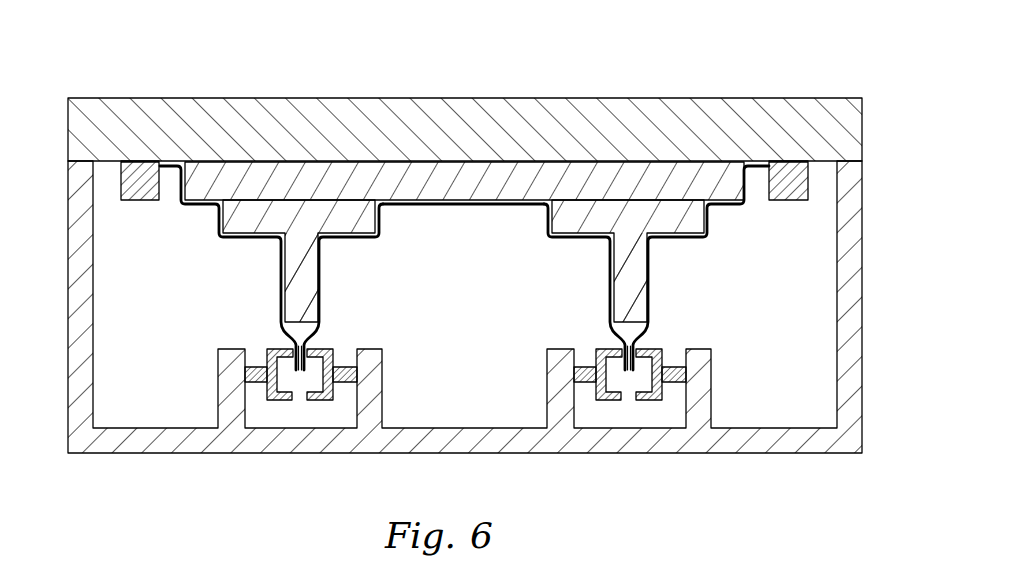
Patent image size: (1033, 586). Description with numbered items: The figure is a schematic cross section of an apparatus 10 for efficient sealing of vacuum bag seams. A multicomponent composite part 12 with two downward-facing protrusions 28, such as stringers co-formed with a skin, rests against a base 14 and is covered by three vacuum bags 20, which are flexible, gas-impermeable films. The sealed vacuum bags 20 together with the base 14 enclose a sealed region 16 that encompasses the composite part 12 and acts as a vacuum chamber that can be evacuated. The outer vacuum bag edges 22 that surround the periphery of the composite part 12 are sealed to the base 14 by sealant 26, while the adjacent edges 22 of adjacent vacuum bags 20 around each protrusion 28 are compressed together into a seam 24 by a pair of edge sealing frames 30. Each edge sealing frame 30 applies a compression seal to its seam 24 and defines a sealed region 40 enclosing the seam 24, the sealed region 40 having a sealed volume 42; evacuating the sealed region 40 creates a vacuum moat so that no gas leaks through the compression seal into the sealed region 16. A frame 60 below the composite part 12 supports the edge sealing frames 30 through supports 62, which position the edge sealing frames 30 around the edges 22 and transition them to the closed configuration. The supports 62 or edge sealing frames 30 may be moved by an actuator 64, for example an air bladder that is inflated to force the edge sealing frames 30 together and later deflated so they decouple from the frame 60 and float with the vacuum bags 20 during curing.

The apparatus 10 is at (152, 35).
The composite part 12 is at (222, 212).
The base 14 is at (210, 98).
The sealed region 16 is at (387, 206).
The vacuum bag 20 is at (278, 245).
The edge 22 is at (146, 162).
The seam 24 is at (306, 352).
The sealant 26 is at (137, 201).
The protrusion 28 is at (285, 290).
The edge sealing frame 30 is at (273, 400).
The sealed region 40 is at (293, 378).
The sealed volume 42 is at (308, 378).
The frame 60 is at (68, 432).
The support 62 is at (252, 368).
The actuator 64 is at (261, 367).